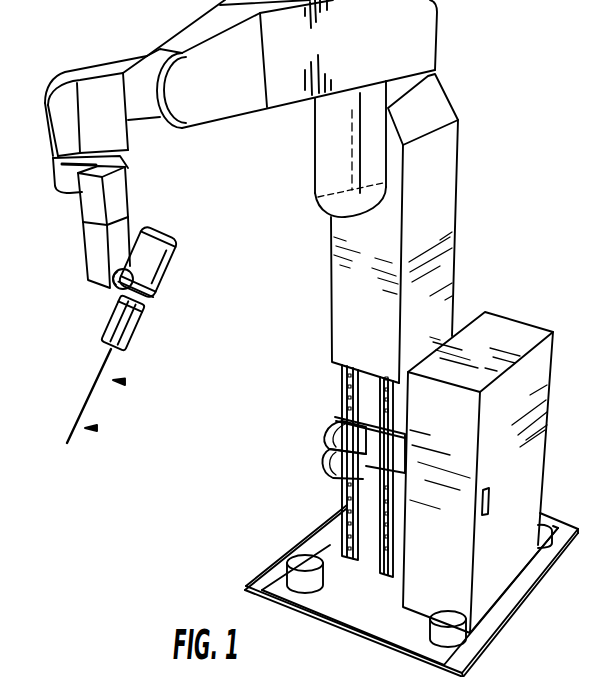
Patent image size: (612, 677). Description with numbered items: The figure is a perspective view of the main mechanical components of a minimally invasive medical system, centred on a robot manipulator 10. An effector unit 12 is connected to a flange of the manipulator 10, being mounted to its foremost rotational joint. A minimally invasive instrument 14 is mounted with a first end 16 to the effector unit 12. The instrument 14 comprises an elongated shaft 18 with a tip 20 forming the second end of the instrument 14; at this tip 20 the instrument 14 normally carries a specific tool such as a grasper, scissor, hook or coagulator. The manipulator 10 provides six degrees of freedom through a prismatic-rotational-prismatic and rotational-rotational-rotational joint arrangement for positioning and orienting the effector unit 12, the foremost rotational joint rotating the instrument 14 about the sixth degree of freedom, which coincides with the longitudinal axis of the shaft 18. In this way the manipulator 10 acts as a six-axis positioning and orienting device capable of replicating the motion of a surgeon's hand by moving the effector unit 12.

The robot manipulator 10 is at (448, 207).
The effector unit 12 is at (143, 318).
The minimally invasive instrument 14 is at (125, 381).
The first end 16 is at (107, 318).
The elongated shaft 18 is at (88, 395).
The tip 20 is at (97, 428).